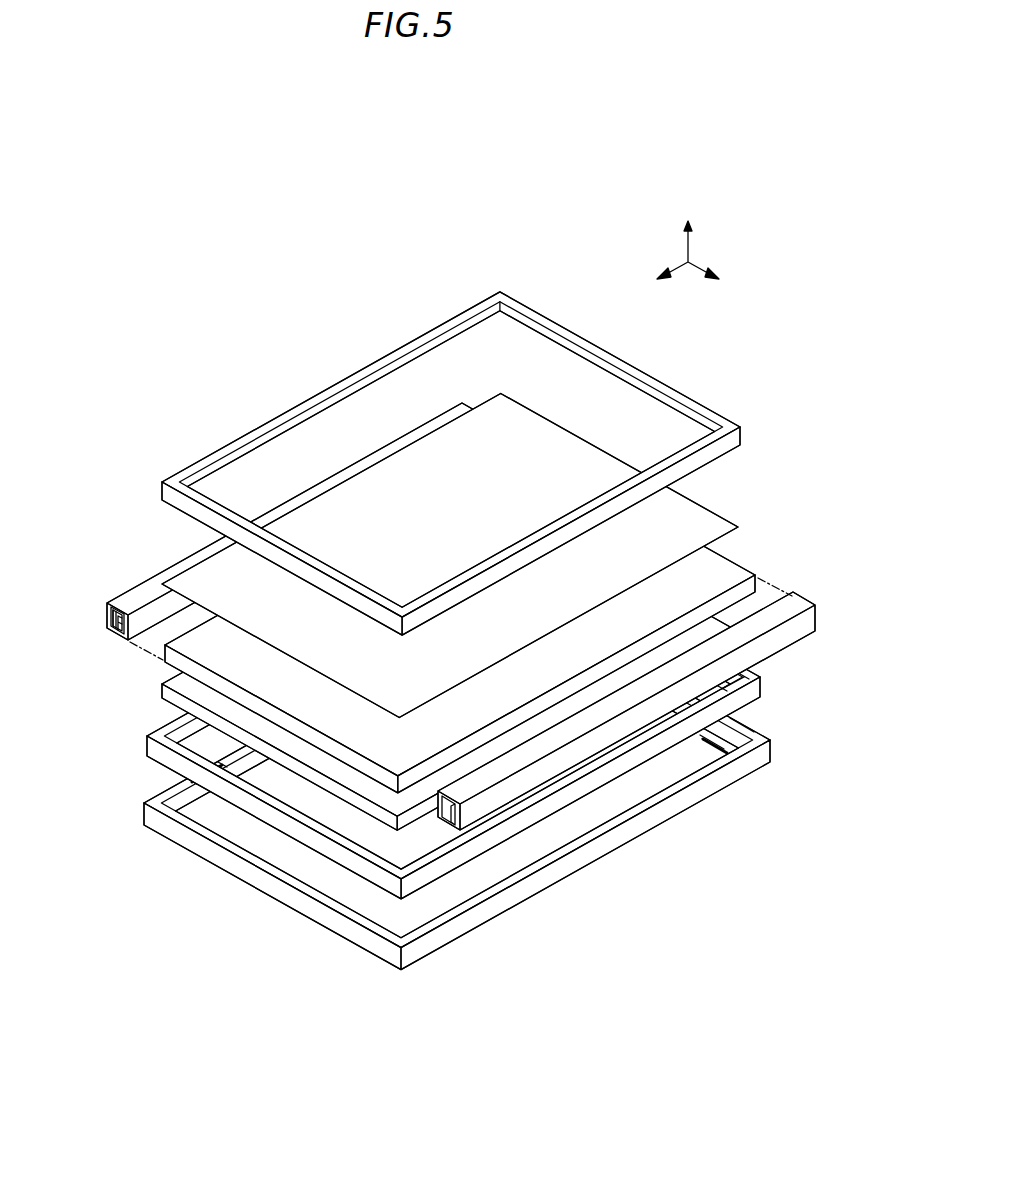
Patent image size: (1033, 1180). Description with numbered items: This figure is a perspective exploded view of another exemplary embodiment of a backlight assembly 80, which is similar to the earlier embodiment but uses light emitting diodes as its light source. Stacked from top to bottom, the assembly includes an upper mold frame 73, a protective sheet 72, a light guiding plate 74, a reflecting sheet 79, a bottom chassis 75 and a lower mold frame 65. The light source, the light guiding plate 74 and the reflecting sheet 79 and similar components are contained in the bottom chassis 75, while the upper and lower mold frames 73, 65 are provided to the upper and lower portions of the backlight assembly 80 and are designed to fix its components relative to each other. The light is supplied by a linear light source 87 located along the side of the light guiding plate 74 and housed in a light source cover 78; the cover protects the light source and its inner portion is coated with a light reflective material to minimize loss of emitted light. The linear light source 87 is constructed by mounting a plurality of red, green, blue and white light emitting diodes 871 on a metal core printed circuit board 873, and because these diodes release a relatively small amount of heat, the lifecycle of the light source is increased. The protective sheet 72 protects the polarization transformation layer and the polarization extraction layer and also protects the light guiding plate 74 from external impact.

The backlight assembly 80 is at (340, 254).
The upper mold frame 73 is at (742, 435).
The protective sheet 72 is at (718, 516).
The light guiding plate 74 is at (740, 563).
The light source cover 78 is at (803, 597).
The reflecting sheet 79 is at (703, 632).
The bottom chassis 75 is at (762, 695).
The lower mold frame 65 is at (775, 745).
The linear light source 87 is at (91, 639).
The light emitting diodes 871 is at (118, 634).
The metal core printed circuit board 873 is at (107, 612).